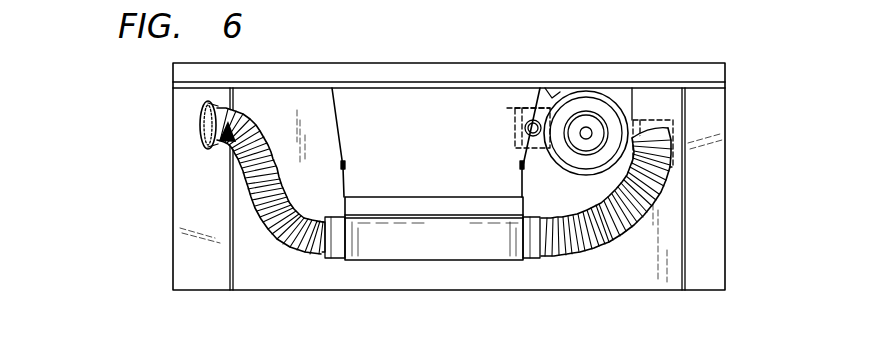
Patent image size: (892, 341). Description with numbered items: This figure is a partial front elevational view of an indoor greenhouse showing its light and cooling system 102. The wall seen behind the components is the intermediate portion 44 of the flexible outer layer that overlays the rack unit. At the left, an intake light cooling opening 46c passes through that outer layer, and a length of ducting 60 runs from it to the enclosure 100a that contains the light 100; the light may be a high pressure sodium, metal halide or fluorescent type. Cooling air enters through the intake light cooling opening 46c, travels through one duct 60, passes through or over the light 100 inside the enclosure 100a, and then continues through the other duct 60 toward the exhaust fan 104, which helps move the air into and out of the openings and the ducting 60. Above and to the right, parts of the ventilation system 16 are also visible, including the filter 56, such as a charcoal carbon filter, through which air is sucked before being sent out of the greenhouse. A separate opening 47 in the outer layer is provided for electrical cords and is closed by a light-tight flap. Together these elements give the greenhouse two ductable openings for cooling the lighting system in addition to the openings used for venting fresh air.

The cooling system 102 is at (136, 173).
The intermediate portion 44 is at (213, 203).
The intake light cooling opening 46c is at (197, 127).
The ducting 60 is at (251, 213).
The exhaust fan 104 is at (331, 259).
The light 100 is at (433, 167).
The enclosure 100a is at (450, 257).
The opening for electrical cords 47 is at (527, 122).
The filter 56 is at (591, 106).
The ventilation system 16 is at (633, 94).